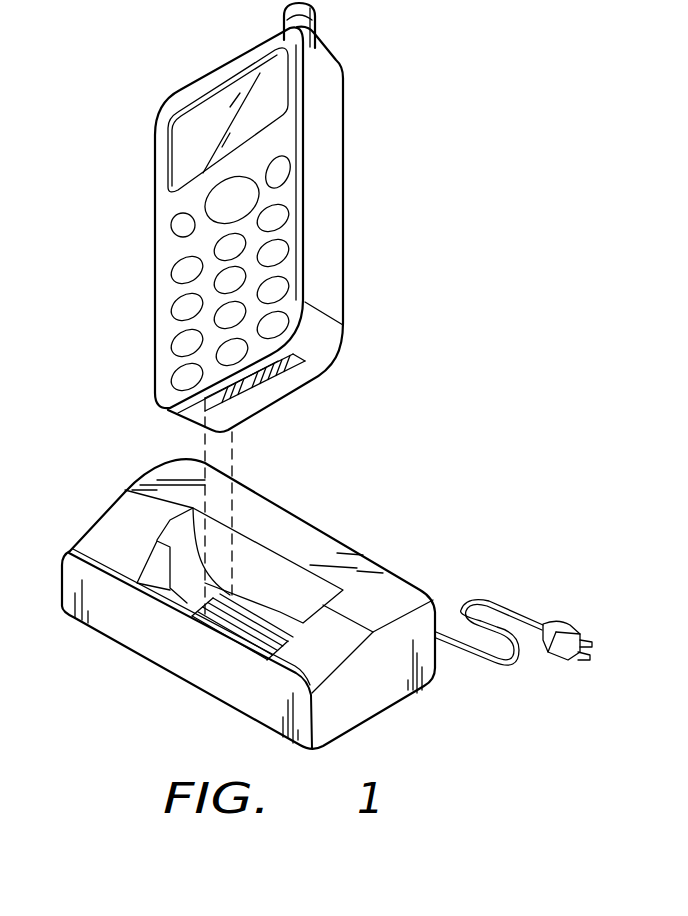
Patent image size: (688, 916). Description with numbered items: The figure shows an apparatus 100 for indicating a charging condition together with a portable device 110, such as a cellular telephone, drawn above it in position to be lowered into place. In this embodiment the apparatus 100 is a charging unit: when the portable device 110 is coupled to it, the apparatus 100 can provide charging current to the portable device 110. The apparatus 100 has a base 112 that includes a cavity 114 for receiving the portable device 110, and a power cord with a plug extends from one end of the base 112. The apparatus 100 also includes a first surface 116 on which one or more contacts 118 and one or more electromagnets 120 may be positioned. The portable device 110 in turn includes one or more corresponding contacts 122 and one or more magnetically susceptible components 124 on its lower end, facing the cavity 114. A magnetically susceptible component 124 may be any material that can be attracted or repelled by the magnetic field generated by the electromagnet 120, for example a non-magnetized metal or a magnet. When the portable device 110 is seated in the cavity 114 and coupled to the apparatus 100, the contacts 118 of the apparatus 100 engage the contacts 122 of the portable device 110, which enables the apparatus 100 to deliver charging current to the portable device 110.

The apparatus 100 is at (327, 605).
The portable device 110 is at (287, 226).
The base 112 is at (373, 720).
The cavity 114 is at (295, 589).
The first surface 116 is at (197, 605).
The contacts 118 is at (248, 607).
The electromagnets 120 is at (237, 620).
The corresponding contacts 122 is at (277, 380).
The magnetically susceptible components 124 is at (240, 388).